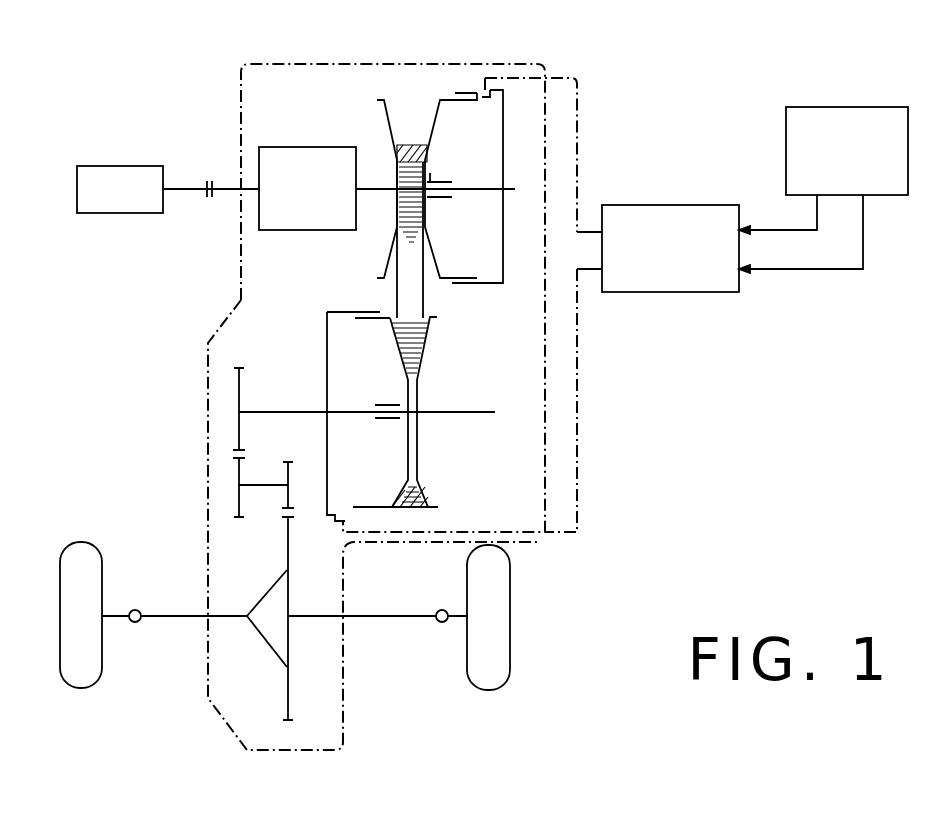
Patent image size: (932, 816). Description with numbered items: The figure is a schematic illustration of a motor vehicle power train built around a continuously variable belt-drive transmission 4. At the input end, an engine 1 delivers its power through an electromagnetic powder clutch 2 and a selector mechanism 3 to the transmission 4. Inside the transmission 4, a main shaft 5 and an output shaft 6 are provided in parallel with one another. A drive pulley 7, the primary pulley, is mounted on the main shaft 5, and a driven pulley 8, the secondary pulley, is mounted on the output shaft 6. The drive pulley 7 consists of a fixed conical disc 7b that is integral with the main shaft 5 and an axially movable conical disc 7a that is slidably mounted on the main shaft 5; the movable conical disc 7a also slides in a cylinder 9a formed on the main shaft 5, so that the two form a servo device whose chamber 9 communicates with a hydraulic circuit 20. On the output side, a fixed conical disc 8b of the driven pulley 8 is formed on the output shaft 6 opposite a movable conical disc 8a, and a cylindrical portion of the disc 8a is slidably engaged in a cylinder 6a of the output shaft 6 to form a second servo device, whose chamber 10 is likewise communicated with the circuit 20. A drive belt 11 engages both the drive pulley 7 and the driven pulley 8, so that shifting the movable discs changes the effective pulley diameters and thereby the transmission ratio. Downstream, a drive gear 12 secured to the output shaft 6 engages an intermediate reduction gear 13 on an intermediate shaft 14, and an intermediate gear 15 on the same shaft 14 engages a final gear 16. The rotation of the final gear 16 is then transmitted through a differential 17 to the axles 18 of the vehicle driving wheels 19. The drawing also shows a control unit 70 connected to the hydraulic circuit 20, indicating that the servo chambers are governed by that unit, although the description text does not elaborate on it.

The engine 1 is at (128, 166).
The electromagnetic powder clutch 2 is at (210, 180).
The selector mechanism 3 is at (310, 147).
The continuously variable belt-drive transmission 4 is at (416, 163).
The main shaft 5 is at (370, 192).
The output shaft 6 is at (288, 410).
The cylinder 6a is at (348, 312).
The drive pulley 7 is at (416, 143).
The movable conical disc 7a is at (447, 95).
The fixed conical disc 7b is at (390, 122).
The driven pulley 8 is at (416, 412).
The movable conical disc 8a is at (392, 319).
The fixed conical disc 8b is at (420, 357).
The chamber 9 is at (484, 147).
The cylinder 9a is at (483, 285).
The chamber 10 is at (337, 348).
The drive belt 11 is at (412, 505).
The drive gear 12 is at (241, 366).
The intermediate reduction gear 13 is at (240, 522).
The intermediate shaft 14 is at (263, 484).
The intermediate gear 15 is at (291, 462).
The final gear 16 is at (288, 720).
The differential 17 is at (272, 602).
The axles 18 is at (120, 618).
The driving wheels 19 is at (97, 574).
The hydraulic circuit 20 is at (665, 294).
The control unit 70 is at (824, 107).